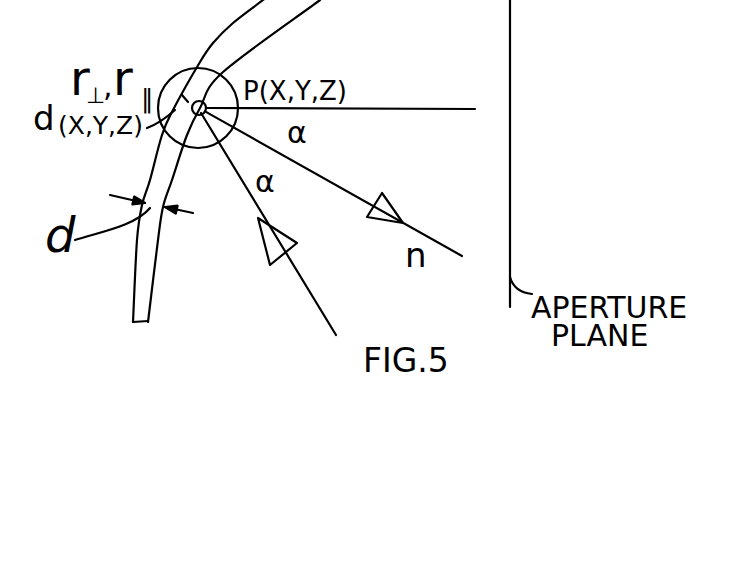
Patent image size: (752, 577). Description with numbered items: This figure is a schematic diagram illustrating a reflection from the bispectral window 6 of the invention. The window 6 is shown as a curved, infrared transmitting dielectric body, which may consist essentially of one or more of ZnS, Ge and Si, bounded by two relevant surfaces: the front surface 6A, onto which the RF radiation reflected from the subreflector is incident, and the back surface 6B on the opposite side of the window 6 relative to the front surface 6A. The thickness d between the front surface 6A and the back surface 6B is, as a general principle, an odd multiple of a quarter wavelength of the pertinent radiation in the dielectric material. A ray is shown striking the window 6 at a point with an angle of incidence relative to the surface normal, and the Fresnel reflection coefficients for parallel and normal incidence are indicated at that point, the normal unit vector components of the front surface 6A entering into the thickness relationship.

The bispectral window 6 is at (201, 181).
The front surface 6A is at (152, 311).
The back surface 6B is at (136, 263).